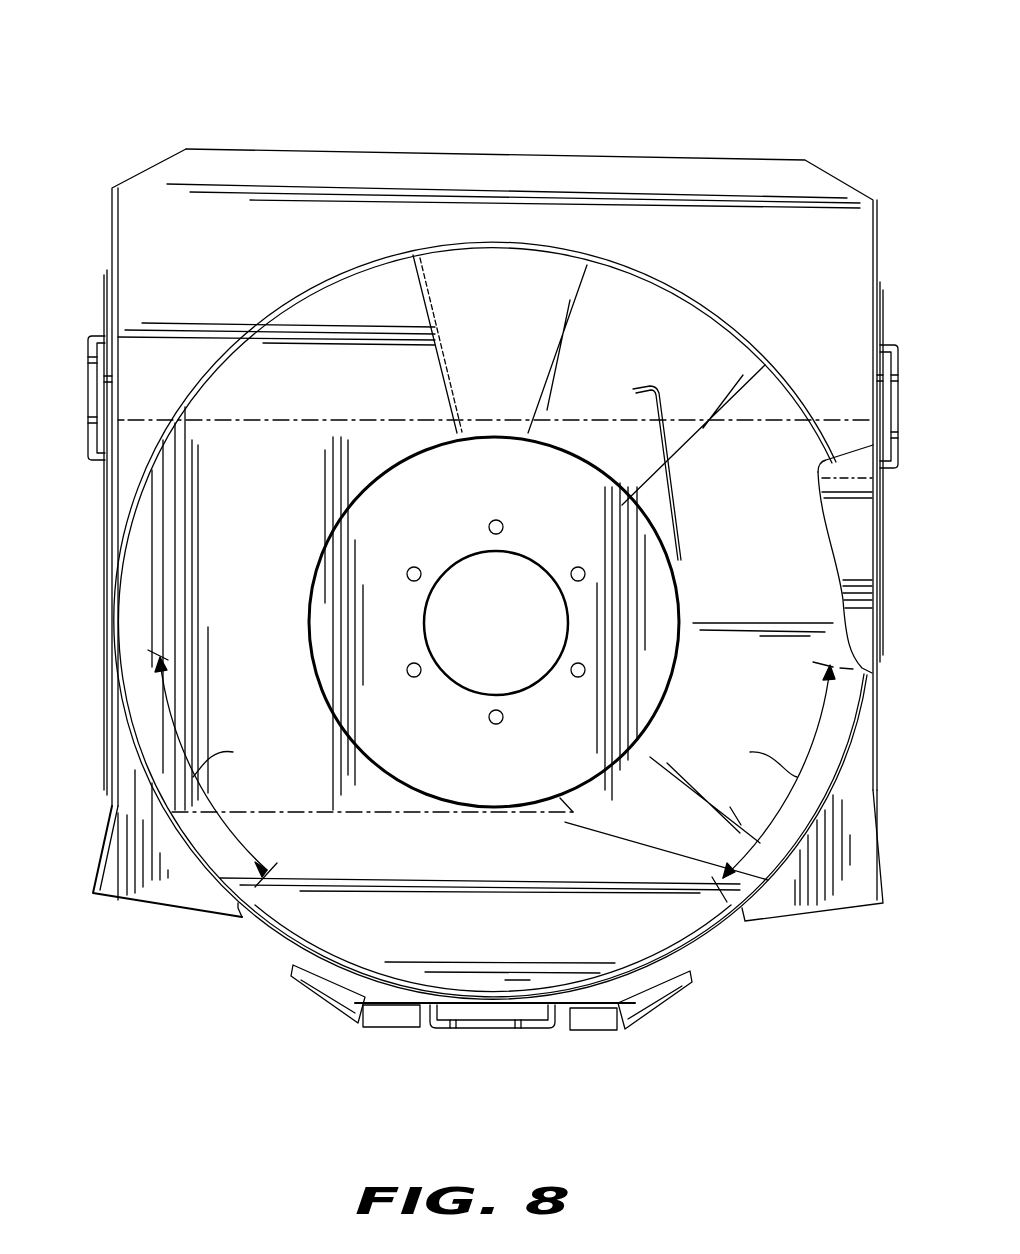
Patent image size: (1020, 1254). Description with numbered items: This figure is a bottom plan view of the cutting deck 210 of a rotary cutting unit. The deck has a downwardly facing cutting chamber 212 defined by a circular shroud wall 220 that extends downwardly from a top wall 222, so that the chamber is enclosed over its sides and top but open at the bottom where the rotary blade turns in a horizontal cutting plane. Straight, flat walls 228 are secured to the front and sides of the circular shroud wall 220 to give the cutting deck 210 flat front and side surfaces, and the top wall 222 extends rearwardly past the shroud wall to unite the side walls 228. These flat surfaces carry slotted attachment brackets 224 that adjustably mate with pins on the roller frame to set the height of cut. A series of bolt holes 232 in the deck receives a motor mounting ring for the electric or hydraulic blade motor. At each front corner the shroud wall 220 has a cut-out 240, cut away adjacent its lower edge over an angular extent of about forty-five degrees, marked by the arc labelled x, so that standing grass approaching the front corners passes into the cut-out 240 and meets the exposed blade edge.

The cutting deck 210 is at (295, 178).
The cutting chamber 212 is at (343, 908).
The circular shroud wall 220 is at (232, 345).
The top wall 222 is at (685, 215).
The slotted attachment brackets 224 is at (95, 338).
The straight, flat walls 228 is at (878, 295).
The bolt holes 232 is at (492, 519).
The cut-out 240 is at (177, 824).